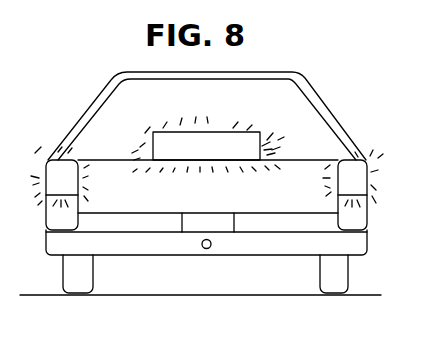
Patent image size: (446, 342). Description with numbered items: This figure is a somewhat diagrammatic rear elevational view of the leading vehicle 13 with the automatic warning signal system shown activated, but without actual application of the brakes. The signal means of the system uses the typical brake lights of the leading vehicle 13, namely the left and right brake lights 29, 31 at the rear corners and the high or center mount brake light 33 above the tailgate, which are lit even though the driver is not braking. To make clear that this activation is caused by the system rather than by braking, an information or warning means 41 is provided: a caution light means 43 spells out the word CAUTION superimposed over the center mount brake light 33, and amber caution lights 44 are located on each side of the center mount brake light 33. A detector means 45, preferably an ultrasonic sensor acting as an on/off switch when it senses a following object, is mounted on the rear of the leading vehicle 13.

The leading vehicle 13 is at (283, 72).
The left brake light 29 is at (52, 173).
The right brake light 31 is at (356, 180).
The high and/or center mount brake light 33 is at (220, 137).
The information or warning means 41 is at (263, 137).
The caution light means 43 is at (163, 139).
The caution lights 44 is at (147, 150).
The detector means 45 is at (206, 249).